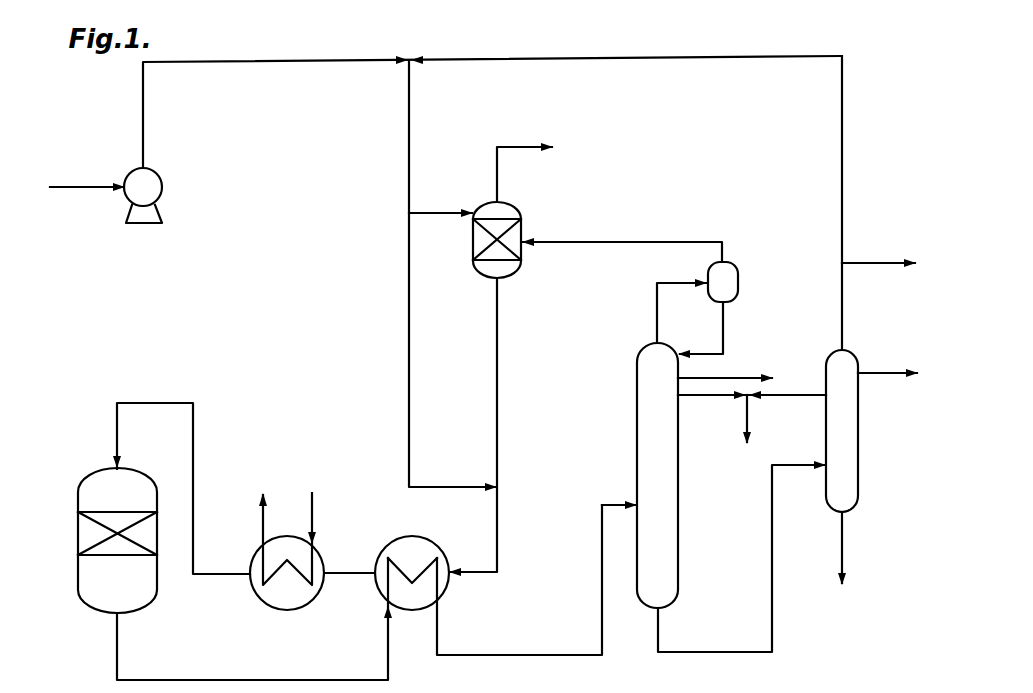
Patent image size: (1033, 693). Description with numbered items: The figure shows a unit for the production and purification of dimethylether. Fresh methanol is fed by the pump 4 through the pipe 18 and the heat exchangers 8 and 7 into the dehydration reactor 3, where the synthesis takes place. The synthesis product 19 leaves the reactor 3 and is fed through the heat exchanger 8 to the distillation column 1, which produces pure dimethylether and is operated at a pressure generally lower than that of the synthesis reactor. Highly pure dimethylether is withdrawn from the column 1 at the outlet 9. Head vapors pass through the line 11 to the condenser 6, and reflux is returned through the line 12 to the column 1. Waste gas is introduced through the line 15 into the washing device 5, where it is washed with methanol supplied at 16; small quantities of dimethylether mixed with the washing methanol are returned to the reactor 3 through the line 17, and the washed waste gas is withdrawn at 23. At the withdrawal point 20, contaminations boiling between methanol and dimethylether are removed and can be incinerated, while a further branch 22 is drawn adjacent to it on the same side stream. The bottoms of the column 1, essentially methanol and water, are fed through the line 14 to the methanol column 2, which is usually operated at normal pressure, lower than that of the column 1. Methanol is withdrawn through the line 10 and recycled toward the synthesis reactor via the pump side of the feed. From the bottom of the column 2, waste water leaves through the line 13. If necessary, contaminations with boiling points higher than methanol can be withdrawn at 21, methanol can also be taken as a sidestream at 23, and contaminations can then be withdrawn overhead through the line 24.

The distillation column 1 is at (640, 475).
The methanol column 2 is at (842, 431).
The dehydration reactor 3 is at (164, 508).
The pump 4 is at (119, 195).
The washing device 5 is at (480, 240).
The condenser 6 is at (737, 282).
The heat exchanger 7 is at (312, 569).
The heat exchanger 8 is at (488, 580).
The pure dimethylether withdrawal 9 is at (725, 362).
The methanol withdrawal line 10 is at (845, 172).
The head vapor line 11 is at (607, 322).
The reflux line 12 is at (682, 345).
The waste water withdrawal 13 is at (852, 557).
The bottoms feed line 14 is at (735, 644).
The waste gas inlet 15 is at (600, 237).
The washing methanol feed 16 is at (415, 205).
The washing liquid return line 17 is at (512, 404).
The fresh methanol pipe 18 is at (352, 407).
The synthesis product line 19 is at (245, 669).
The intermediate contaminant withdrawal 20 is at (712, 409).
The heavy contaminant withdrawal 21 is at (806, 424).
The side stream withdrawal line 22 is at (738, 437).
The waste gas withdrawal 23 is at (704, 261).
The overhead contaminant withdrawal 24 is at (879, 248).